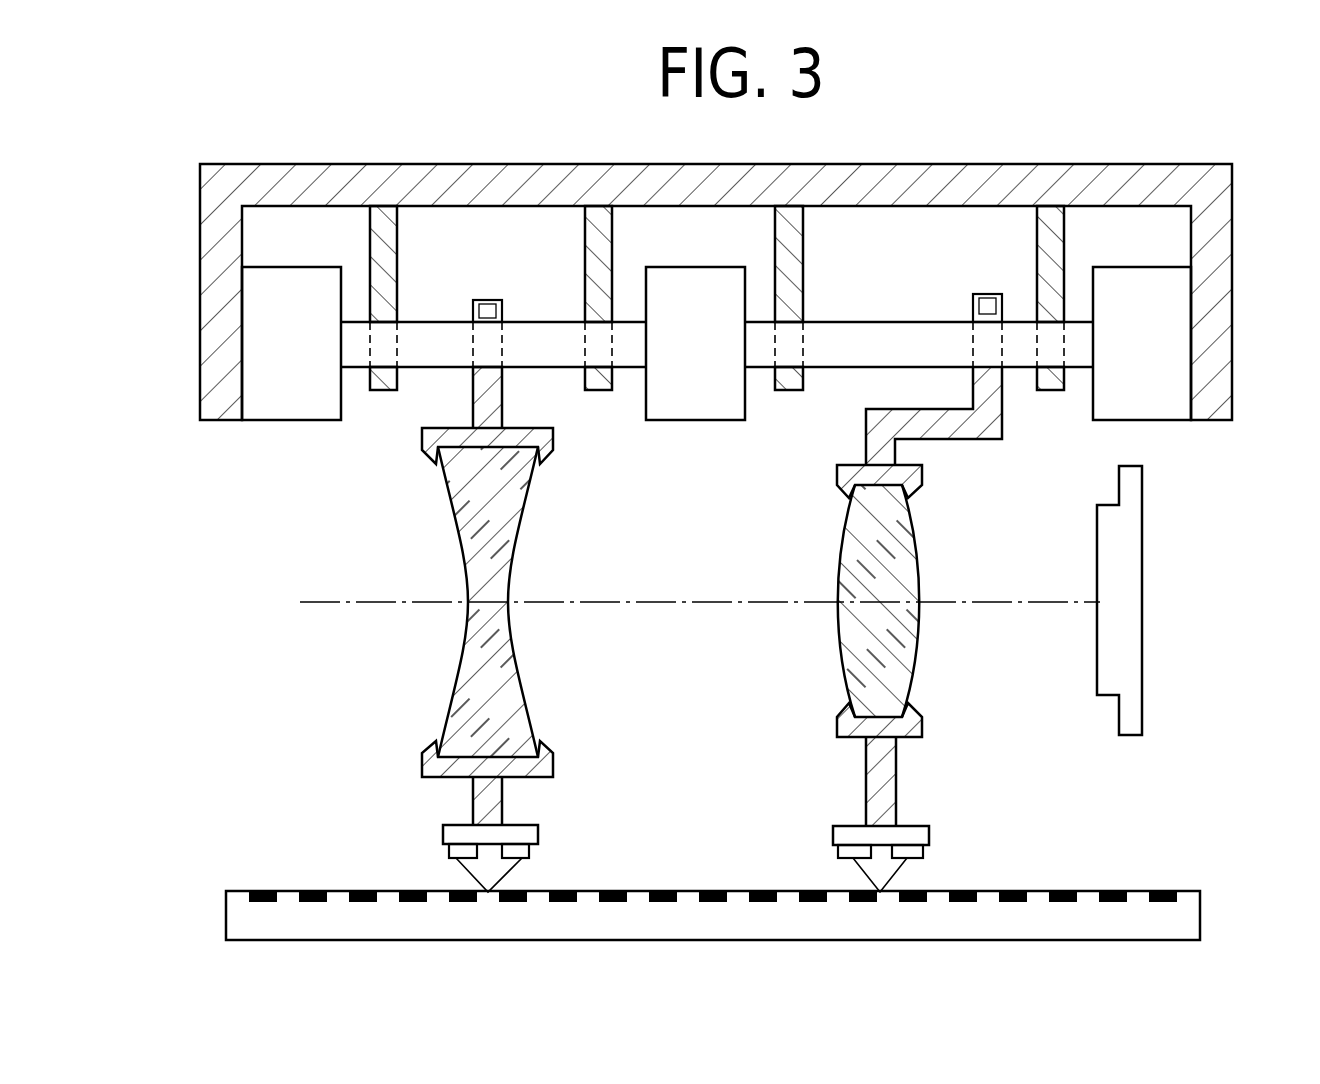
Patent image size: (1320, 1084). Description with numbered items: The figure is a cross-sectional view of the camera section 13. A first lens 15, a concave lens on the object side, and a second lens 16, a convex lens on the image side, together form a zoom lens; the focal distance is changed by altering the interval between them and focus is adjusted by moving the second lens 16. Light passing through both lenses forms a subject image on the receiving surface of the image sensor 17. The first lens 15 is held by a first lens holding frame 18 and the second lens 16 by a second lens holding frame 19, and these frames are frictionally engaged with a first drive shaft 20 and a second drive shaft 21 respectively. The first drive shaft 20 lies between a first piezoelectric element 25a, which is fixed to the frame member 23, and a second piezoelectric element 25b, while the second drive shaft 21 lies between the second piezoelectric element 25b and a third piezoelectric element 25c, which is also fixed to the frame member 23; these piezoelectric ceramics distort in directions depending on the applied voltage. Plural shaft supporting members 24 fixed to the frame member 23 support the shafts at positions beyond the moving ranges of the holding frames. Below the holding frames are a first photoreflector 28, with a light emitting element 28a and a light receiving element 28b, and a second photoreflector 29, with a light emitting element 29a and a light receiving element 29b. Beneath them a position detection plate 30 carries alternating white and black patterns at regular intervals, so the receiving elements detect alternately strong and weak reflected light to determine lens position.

The camera section 13 is at (200, 672).
The first lens 15 is at (468, 655).
The second lens 16 is at (865, 655).
The image sensor 17 is at (1128, 617).
The first lens holding frame 18 is at (420, 450).
The second lens holding frame 19 is at (945, 435).
The first drive shaft 20 is at (537, 337).
The second drive shaft 21 is at (872, 337).
The frame member 23 is at (208, 325).
The shaft supporting member 24 is at (380, 250).
The first piezoelectric element 25a is at (293, 402).
The second piezoelectric element 25b is at (690, 398).
The third piezoelectric element 25c is at (1157, 405).
The first photoreflector 28 is at (445, 835).
The light emitting element 28a is at (455, 852).
The light receiving element 28b is at (525, 852).
The second photoreflector 29 is at (838, 837).
The light emitting element 29a is at (855, 853).
The light receiving element 29b is at (915, 853).
The position detection plate 30 is at (243, 918).